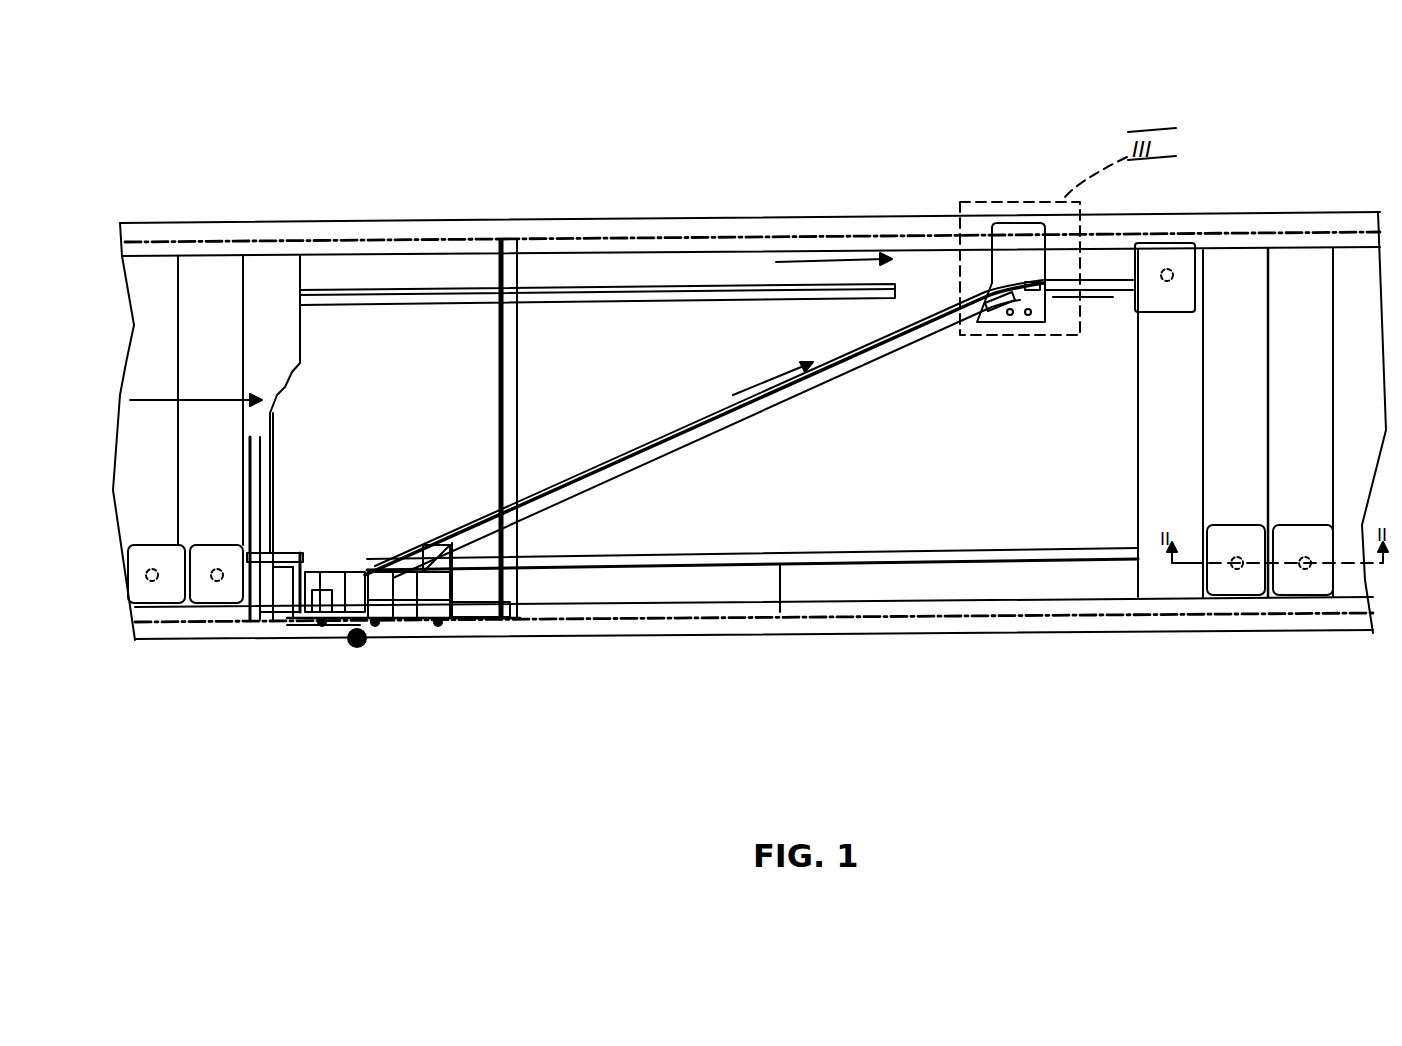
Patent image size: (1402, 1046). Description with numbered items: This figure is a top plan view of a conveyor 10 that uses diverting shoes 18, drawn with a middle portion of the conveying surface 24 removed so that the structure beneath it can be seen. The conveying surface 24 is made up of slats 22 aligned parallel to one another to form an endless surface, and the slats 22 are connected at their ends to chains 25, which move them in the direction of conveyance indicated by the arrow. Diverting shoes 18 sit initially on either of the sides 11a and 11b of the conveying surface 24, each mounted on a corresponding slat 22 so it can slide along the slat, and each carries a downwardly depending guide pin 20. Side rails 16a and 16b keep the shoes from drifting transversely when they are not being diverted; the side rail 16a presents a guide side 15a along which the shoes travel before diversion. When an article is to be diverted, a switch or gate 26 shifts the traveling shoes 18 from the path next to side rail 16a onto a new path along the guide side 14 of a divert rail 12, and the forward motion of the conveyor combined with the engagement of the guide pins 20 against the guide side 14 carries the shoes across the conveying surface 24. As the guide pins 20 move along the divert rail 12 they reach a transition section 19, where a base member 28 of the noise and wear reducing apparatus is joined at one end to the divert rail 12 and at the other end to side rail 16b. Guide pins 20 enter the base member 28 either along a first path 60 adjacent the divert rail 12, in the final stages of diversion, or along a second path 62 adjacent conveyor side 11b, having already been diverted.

The conveyor 10 is at (749, 428).
The side of conveying surface 11a is at (631, 630).
The side of conveying surface 11b is at (737, 232).
The divert rail 12 is at (797, 397).
The guide side 14 is at (629, 455).
The guide side of side rail 15a is at (780, 612).
The side rail 16a is at (783, 562).
The side rail 16b is at (540, 300).
The diverting shoes 18 is at (141, 558).
The transition section 19 is at (978, 202).
The guide pin 20 is at (160, 580).
The slats 22 is at (275, 282).
The conveying surface 24 is at (208, 290).
The chains 25 is at (636, 236).
The switch or gate 26 is at (340, 580).
The base member or magnet member 28 is at (1018, 265).
The first path 60 is at (759, 388).
The second path 62 is at (818, 265).